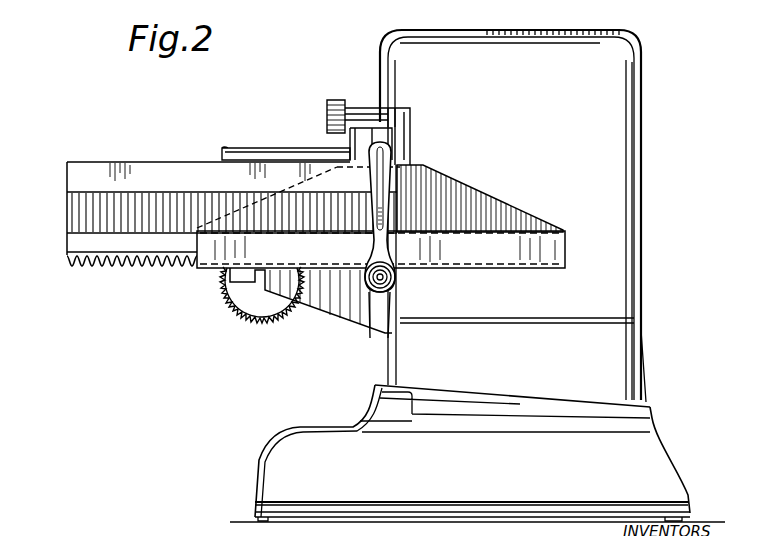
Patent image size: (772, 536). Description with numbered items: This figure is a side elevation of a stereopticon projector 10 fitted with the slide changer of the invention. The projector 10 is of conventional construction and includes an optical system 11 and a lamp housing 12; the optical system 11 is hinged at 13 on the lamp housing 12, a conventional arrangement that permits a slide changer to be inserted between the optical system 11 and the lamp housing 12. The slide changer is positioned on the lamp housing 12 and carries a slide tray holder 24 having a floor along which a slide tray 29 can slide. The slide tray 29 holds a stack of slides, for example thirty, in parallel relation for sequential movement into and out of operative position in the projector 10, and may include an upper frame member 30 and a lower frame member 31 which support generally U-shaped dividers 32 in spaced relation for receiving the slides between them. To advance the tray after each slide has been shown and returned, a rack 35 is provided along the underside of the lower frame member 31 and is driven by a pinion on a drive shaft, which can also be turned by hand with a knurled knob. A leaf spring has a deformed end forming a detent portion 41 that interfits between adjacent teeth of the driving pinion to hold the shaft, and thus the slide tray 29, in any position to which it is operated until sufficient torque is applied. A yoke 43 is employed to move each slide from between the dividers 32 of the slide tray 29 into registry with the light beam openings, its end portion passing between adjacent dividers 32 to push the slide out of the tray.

The stereopticon projector 10 is at (322, 78).
The optical system 11 is at (237, 148).
The lamp housing 12 is at (531, 97).
The hinge 13 is at (373, 287).
The slide tray holder 24 is at (217, 253).
The slide tray 29 is at (116, 158).
The upper frame member 30 is at (88, 167).
The lower frame member 31 is at (67, 247).
The dividers 32 is at (195, 203).
The rack 35 is at (100, 266).
The detent portion 41 is at (338, 100).
The yoke 43 is at (396, 167).